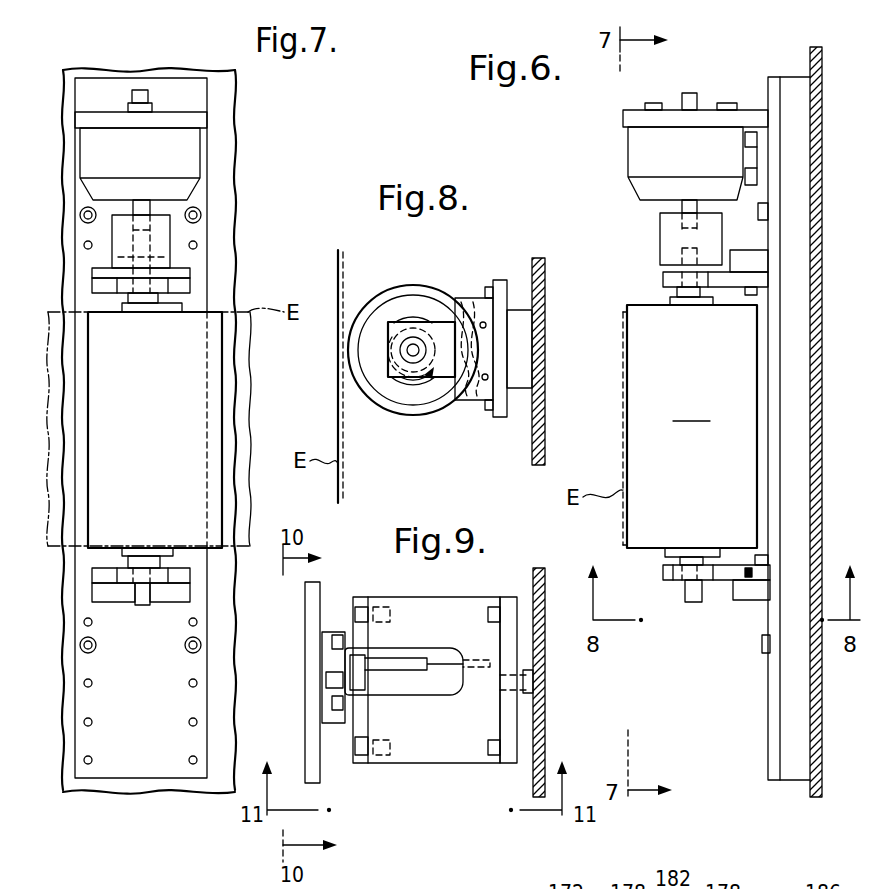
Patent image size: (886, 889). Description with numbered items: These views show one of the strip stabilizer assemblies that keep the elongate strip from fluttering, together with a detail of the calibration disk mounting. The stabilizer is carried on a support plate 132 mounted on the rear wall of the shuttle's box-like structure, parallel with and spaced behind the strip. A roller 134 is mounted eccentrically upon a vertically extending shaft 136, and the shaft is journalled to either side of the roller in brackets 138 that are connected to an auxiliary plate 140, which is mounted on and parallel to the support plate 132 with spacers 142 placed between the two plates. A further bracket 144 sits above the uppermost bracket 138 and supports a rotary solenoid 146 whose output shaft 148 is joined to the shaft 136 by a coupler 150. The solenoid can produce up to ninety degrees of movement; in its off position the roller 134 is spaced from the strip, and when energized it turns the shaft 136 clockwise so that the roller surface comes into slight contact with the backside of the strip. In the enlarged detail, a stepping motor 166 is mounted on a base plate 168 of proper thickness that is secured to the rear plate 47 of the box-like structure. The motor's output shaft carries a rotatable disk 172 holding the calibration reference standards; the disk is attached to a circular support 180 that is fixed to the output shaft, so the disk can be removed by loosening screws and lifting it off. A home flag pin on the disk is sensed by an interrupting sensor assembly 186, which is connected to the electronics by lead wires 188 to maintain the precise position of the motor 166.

In FIG. 7, the support plate 132 is at (128, 66).
In FIG. 8, the support plate 132 is at (572, 238).
In FIG. 6, the support plate 132 is at (807, 62).
In FIG. 7, the roller 134 is at (222, 528).
In FIG. 8, the roller 134 is at (422, 294).
In FIG. 6, the roller 134 is at (690, 426).
In FIG. 7, the shaft 136 is at (142, 606).
In FIG. 6, the shaft 136 is at (693, 602).
In FIG. 7, the brackets 138 is at (183, 285).
In FIG. 8, the brackets 138 is at (400, 322).
In FIG. 6, the brackets 138 is at (763, 281).
In FIG. 7, the auxiliary plate 140 is at (147, 770).
In FIG. 8, the auxiliary plate 140 is at (499, 300).
In FIG. 6, the auxiliary plate 140 is at (777, 428).
In FIG. 8, the spacers 142 is at (516, 284).
In FIG. 6, the spacers 142 is at (797, 360).
In FIG. 7, the further bracket 144 is at (203, 121).
In FIG. 6, the further bracket 144 is at (748, 110).
In FIG. 7, the rotary solenoid 146 is at (195, 155).
In FIG. 6, the rotary solenoid 146 is at (628, 155).
In FIG. 7, the output shaft 148 is at (148, 212).
In FIG. 6, the output shaft 148 is at (682, 207).
In FIG. 7, the coupler 150 is at (165, 236).
In FIG. 6, the coupler 150 is at (660, 243).
In FIG. 9, the rear plate 47 is at (545, 744).
In FIG. 9, the stepping motor 166 is at (425, 763).
In FIG. 9, the base plate 168 is at (522, 766).
In FIG. 9, the rotatable disk 172 is at (320, 581).
In FIG. 9, the circular support 180 is at (345, 722).
In FIG. 9, the interrupting sensor assembly 186 is at (338, 668).
In FIG. 9, the lead wires 188 is at (444, 656).